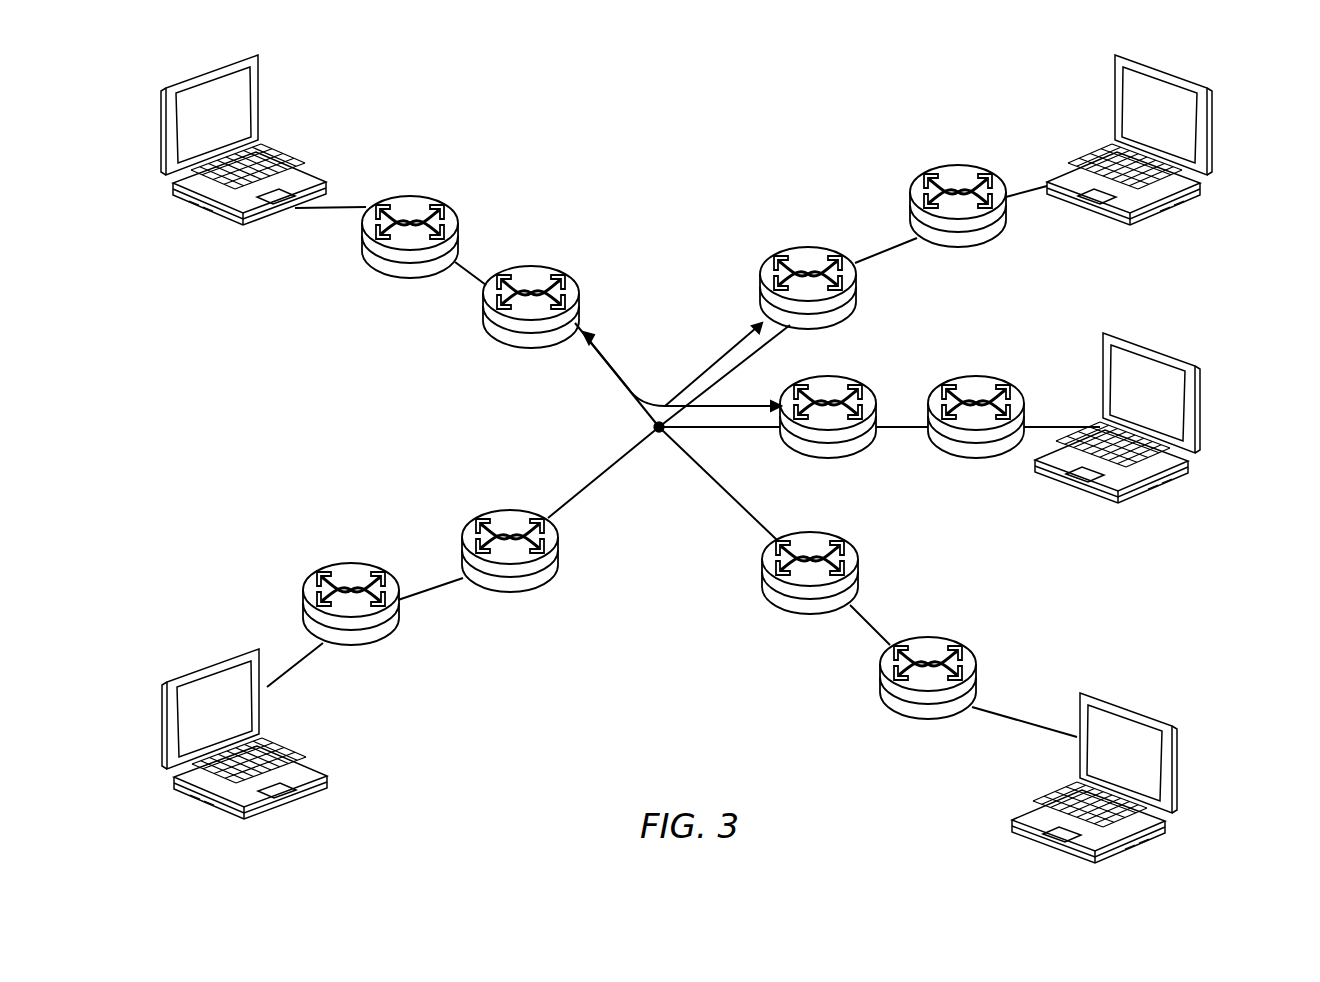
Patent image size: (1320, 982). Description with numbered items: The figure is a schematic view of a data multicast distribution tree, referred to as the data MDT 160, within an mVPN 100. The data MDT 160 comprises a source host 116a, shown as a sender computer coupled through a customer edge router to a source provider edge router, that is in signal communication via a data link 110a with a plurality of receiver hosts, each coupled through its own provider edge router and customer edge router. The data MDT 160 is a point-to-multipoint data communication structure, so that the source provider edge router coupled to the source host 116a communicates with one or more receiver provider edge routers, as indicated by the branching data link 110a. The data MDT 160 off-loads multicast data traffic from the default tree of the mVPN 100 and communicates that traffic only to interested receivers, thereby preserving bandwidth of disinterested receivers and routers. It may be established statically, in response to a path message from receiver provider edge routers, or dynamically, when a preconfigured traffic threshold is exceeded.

The mVPN 100 is at (238, 374).
The data link 110a is at (723, 356).
The source host 116a is at (172, 130).
The data MDT 160 is at (644, 584).